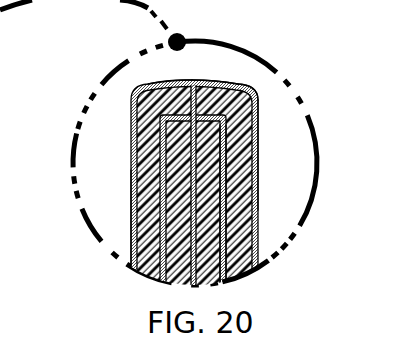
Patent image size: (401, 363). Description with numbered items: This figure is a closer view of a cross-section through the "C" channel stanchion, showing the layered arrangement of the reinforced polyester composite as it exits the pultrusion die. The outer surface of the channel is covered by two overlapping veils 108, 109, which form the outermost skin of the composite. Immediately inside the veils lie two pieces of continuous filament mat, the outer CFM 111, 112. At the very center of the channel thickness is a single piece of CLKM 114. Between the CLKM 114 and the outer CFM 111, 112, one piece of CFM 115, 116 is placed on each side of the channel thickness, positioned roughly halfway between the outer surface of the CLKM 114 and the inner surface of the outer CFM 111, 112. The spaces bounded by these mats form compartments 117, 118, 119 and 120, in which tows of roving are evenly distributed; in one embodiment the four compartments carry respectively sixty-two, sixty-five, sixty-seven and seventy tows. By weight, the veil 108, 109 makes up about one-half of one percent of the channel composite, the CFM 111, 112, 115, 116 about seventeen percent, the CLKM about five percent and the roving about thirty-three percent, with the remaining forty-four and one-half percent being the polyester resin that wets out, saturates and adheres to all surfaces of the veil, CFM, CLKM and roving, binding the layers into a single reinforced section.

The veil 108 is at (128, 105).
The veil 109 is at (258, 125).
The CFM 111 is at (153, 82).
The CFM 112 is at (255, 92).
The CLKM 114 is at (223, 84).
The CFM 115 is at (133, 223).
The CFM 116 is at (248, 263).
The compartment 117 is at (148, 143).
The compartment 118 is at (157, 185).
The compartment 119 is at (240, 184).
The compartment 120 is at (229, 153).